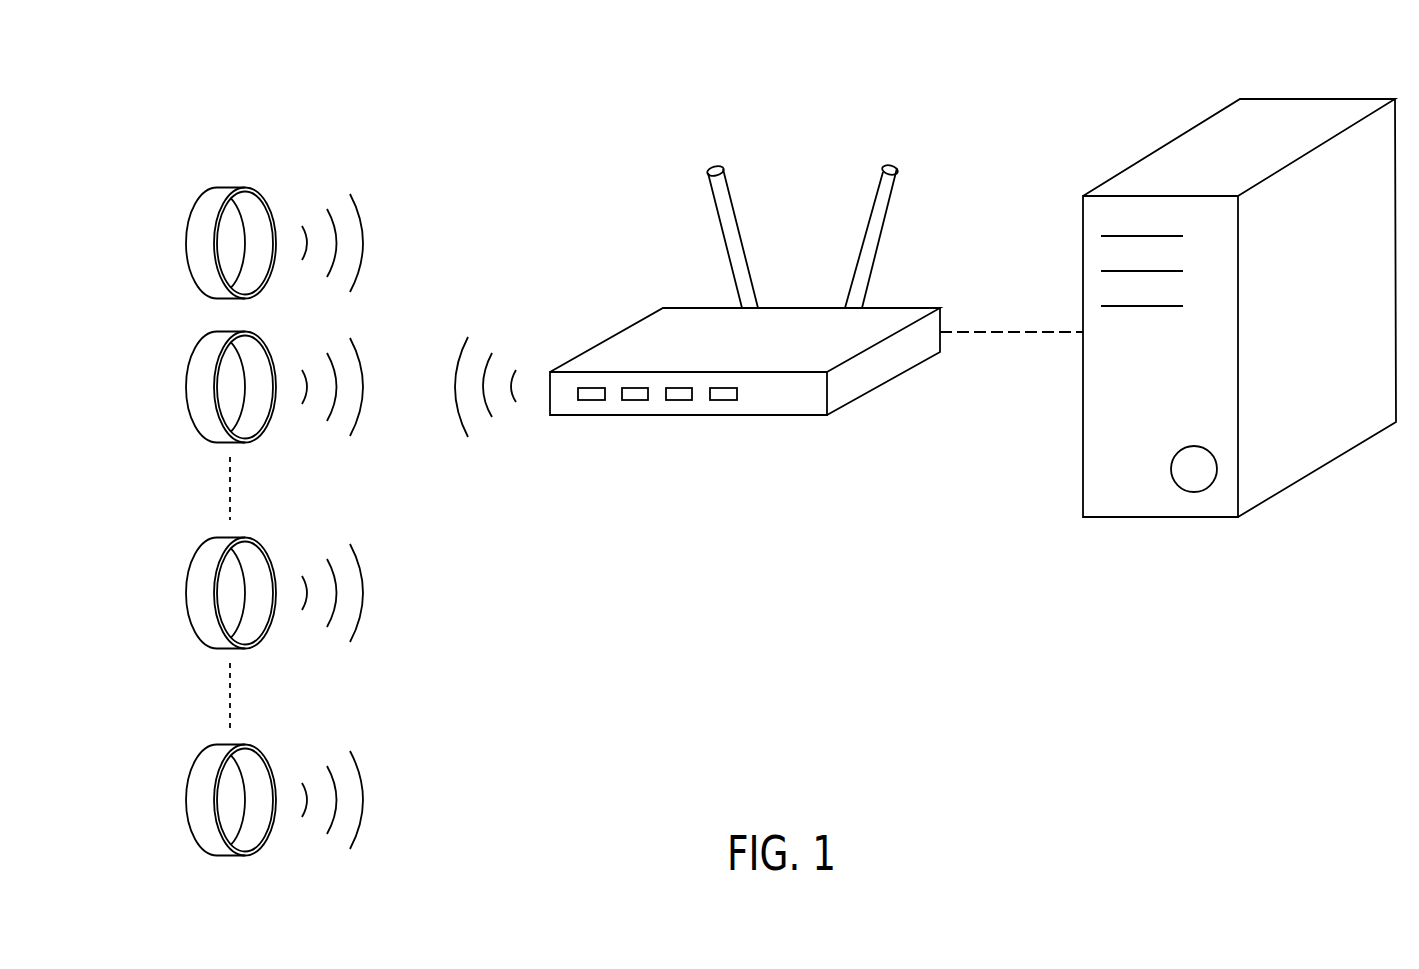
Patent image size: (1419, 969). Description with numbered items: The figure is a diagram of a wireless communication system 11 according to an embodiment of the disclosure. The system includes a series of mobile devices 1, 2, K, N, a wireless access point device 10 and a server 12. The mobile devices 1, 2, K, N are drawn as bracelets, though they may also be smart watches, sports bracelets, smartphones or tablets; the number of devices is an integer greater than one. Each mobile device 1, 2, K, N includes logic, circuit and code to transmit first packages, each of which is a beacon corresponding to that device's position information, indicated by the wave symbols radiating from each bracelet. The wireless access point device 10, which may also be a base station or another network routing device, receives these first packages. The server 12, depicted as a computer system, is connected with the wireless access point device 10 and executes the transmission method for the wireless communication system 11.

The mobile device 1 is at (200, 247).
The mobile device 2 is at (200, 390).
The mobile device K is at (200, 597).
The mobile device N is at (200, 803).
The wireless access point device 10 is at (633, 347).
The wireless communication system 11 is at (177, 118).
The server 12 is at (1165, 167).